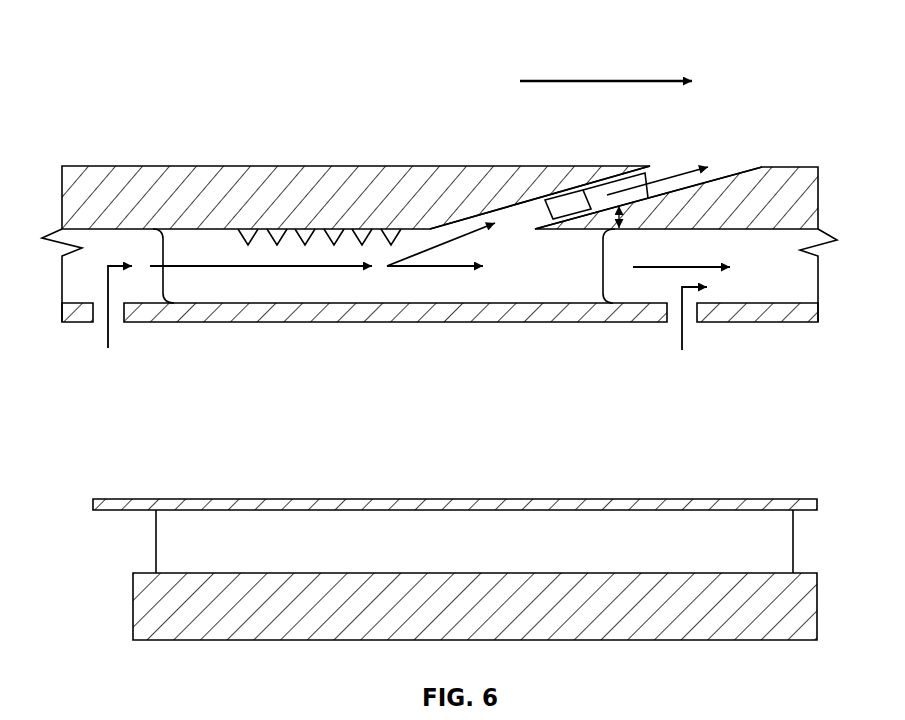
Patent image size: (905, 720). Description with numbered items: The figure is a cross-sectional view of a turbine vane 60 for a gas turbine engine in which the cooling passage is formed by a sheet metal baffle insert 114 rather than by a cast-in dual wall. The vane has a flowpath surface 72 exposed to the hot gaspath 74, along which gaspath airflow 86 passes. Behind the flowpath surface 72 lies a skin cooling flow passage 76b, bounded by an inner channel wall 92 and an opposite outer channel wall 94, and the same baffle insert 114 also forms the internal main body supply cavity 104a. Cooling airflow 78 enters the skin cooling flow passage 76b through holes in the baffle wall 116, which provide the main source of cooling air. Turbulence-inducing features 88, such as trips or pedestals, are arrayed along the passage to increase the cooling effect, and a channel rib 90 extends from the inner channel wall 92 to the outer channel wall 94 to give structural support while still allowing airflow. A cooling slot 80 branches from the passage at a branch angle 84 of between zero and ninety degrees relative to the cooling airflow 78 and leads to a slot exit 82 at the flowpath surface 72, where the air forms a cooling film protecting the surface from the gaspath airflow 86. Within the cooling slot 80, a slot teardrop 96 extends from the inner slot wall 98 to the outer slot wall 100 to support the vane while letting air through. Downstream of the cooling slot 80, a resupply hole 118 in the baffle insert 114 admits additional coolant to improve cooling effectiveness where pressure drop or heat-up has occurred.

The turbine vane 60 is at (176, 35).
The flowpath surface 72 is at (207, 164).
The hot gaspath 74 is at (366, 138).
The skin cooling flow passage 76b is at (794, 279).
The cooling airflow 78 is at (237, 265).
The cooling slot 80 is at (510, 205).
The slot exit 82 is at (747, 167).
The branch angle 84 is at (628, 214).
The gaspath airflow 86 is at (532, 80).
The turbulence-inducing features 88 is at (363, 227).
The channel rib 90 is at (245, 284).
The inner channel wall 92 is at (182, 309).
The outer channel wall 94 is at (182, 228).
The slot teardrop 96 is at (617, 182).
The inner slot wall 98 is at (647, 193).
The outer slot wall 100 is at (597, 182).
The internal main body supply cavity 104a is at (499, 436).
The sheet metal baffle insert 114 is at (780, 325).
The holes in the baffle wall 116 is at (102, 318).
The resupply hole 118 is at (675, 318).